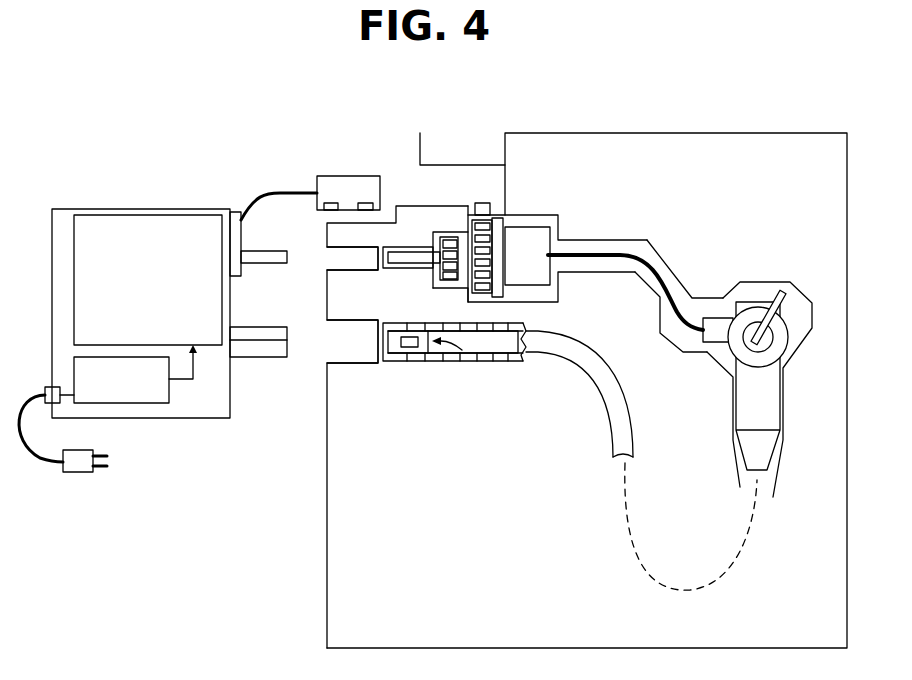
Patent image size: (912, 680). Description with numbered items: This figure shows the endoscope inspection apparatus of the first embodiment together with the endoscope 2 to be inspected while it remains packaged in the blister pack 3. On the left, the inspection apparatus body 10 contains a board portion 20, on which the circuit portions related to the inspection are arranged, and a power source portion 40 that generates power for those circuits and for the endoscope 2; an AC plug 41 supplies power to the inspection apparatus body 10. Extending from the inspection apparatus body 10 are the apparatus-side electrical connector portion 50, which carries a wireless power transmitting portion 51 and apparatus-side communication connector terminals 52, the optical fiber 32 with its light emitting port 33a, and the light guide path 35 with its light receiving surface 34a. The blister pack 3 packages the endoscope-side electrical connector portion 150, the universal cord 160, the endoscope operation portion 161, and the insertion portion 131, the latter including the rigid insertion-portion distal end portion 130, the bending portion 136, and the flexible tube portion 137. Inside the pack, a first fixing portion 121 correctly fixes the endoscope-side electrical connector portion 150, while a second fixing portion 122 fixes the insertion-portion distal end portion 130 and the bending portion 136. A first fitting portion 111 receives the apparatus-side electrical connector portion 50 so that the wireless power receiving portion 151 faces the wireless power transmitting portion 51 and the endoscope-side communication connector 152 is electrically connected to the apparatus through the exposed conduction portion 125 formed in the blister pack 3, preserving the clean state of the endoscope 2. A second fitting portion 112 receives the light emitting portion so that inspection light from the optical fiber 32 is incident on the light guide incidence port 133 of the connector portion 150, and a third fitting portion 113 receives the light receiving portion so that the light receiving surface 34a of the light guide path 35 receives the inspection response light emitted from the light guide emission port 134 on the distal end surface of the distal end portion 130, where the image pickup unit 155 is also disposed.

The endoscope 2 is at (780, 568).
The blister pack 3 is at (640, 133).
The inspection apparatus body 10 is at (143, 209).
The board portion 20 is at (74, 267).
The optical fiber 32 is at (267, 251).
The light emitting port 33a is at (300, 249).
The light receiving surface 34a is at (287, 352).
The light guide path 35 is at (267, 357).
The power source portion 40 is at (74, 362).
The AC plug 41 is at (78, 473).
The apparatus-side electrical connector portion 50 is at (348, 176).
The wireless power transmitting portion 51 is at (331, 203).
The apparatus-side communication connector terminals 52 is at (366, 203).
The first fitting portion 111 is at (446, 200).
The second fitting portion 112 is at (344, 259).
The third fitting portion 113 is at (344, 338).
The first fixing portion 121 is at (668, 266).
The second fixing portion 122 is at (415, 354).
The exposed conduction portion 125 is at (483, 203).
The insertion-portion distal end portion 130 is at (475, 348).
The insertion portion 131 is at (579, 429).
The light guide incidence port 133 is at (392, 258).
The light guide emission port 134 is at (395, 352).
The bending portion 136 is at (486, 338).
The flexible tube portion 137 is at (593, 353).
The endoscope-side electrical connector portion 150 is at (532, 221).
The wireless power receiving portion 151 is at (447, 240).
The endoscope-side communication connector 152 is at (476, 222).
The image pickup unit 155 is at (442, 360).
The universal cord 160 is at (610, 254).
The endoscope operation portion 161 is at (767, 282).